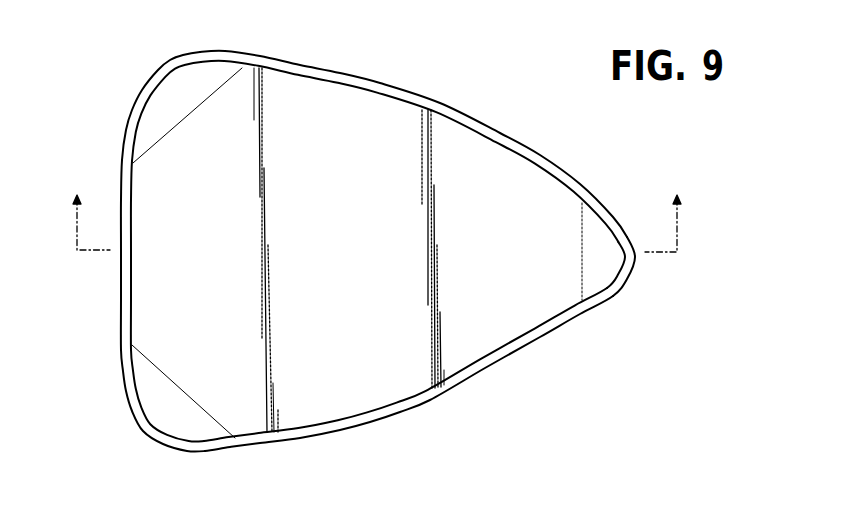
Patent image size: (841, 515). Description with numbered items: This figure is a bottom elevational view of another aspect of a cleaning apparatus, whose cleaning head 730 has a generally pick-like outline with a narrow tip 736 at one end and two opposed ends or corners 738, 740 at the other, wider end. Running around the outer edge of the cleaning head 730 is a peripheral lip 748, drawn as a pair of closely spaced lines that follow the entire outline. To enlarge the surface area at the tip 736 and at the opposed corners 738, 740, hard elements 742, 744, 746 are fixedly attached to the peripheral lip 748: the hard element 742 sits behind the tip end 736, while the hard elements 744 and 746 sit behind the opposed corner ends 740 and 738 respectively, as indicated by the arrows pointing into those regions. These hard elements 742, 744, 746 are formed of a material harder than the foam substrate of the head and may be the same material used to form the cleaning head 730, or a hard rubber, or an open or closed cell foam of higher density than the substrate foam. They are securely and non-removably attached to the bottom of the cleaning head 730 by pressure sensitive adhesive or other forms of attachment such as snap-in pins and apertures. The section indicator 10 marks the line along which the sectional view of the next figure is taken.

The cleaning head 730 is at (472, 76).
The tip 736 is at (637, 249).
The corner 738 is at (173, 62).
The corner 740 is at (140, 422).
The hard element 742 is at (593, 265).
The hard element 744 is at (183, 403).
The hard element 746 is at (175, 107).
The peripheral lip 748 is at (398, 86).
The section line for FIG. 10 is at (377, 211).